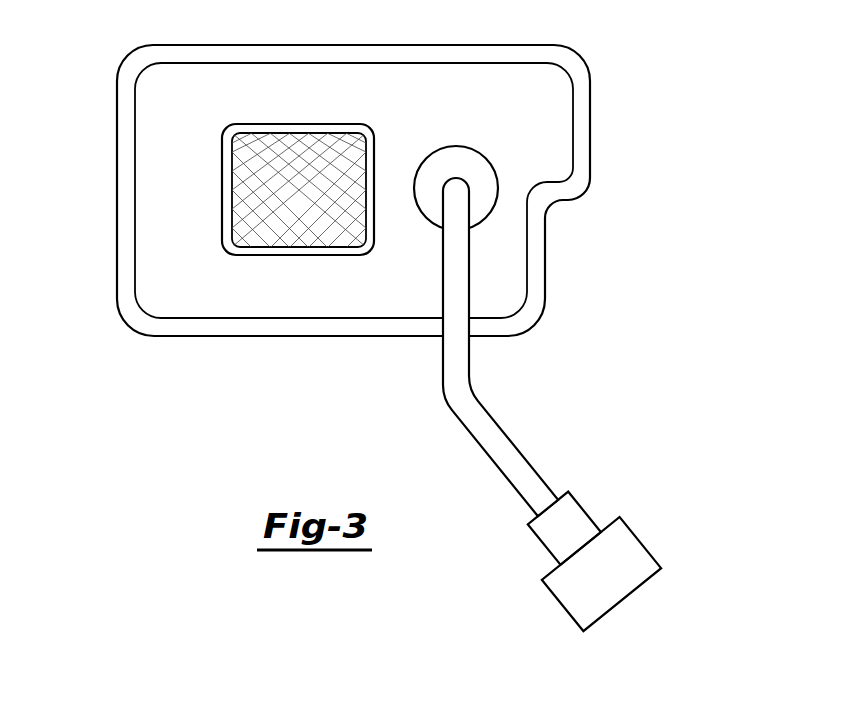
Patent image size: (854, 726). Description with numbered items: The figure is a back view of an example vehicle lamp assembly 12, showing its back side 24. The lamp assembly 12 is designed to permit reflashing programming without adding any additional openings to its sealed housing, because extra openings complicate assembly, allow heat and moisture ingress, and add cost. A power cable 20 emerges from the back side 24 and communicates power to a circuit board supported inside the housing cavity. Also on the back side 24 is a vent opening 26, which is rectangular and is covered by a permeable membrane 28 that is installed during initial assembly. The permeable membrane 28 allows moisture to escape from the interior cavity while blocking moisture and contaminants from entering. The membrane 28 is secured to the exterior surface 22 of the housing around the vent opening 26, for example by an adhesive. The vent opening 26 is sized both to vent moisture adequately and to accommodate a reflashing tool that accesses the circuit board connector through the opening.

The lamp assembly 12 is at (402, 214).
The power cable 20 is at (508, 455).
The exterior surface 22 is at (222, 290).
The back side 24 is at (245, 353).
The vent opening 26 is at (370, 132).
The permeable membrane 28 is at (287, 162).